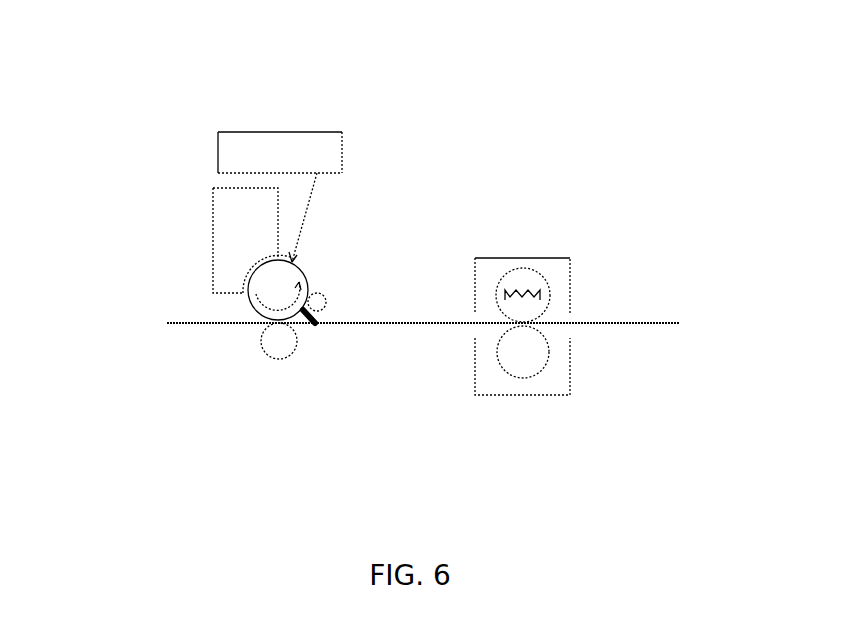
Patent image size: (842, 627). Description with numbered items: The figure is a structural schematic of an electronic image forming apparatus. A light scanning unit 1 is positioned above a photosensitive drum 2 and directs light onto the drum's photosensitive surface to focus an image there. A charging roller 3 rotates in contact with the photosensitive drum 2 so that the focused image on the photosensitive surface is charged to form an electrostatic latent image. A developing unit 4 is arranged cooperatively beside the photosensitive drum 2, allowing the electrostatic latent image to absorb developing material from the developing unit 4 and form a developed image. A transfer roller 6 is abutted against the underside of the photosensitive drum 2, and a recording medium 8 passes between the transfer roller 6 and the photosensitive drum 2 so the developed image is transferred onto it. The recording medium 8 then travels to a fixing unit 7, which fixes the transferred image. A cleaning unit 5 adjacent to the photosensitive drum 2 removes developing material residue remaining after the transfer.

The light scanning unit 1 is at (297, 147).
The photosensitive drum 2 is at (275, 300).
The charging roller 3 is at (318, 302).
The developing unit 4 is at (250, 223).
The cleaning unit 5 is at (313, 322).
The transfer roller 6 is at (283, 342).
The fixing unit 7 is at (563, 273).
The recording medium 8 is at (663, 327).